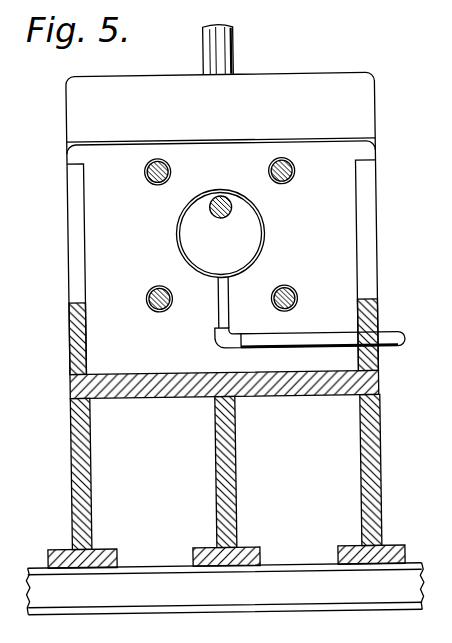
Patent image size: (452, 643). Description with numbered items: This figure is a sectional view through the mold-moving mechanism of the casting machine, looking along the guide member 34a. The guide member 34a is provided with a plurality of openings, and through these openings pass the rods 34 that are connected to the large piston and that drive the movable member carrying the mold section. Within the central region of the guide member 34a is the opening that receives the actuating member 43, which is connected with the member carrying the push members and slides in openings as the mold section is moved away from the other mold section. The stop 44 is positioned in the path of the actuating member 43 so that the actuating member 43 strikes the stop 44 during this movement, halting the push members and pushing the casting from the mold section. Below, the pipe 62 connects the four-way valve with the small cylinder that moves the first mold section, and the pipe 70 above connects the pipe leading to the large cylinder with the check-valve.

The pipe 70 is at (237, 45).
The guide member 34a is at (244, 153).
The rods 34 is at (147, 170).
The actuating member 43 is at (211, 207).
The stop 44 is at (197, 232).
The pipe 62 is at (217, 315).